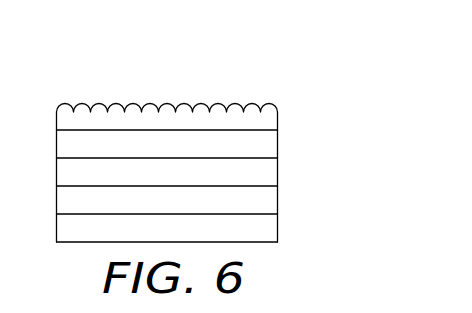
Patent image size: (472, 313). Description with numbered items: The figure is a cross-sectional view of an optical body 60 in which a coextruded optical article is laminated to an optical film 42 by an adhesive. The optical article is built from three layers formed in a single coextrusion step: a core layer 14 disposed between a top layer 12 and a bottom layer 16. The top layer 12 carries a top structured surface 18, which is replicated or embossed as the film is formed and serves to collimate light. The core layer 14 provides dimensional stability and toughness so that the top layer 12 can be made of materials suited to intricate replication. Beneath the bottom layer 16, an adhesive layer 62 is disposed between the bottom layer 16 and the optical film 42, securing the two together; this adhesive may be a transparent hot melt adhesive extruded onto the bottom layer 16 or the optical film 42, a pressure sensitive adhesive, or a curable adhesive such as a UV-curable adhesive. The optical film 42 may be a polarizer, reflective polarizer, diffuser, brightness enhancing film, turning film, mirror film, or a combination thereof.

The optical body 60 is at (243, 70).
The top structured surface 18 is at (256, 102).
The top layer 12 is at (267, 115).
The core layer 14 is at (267, 145).
The bottom layer 16 is at (267, 174).
The adhesive layer 62 is at (267, 203).
The optical film 42 is at (267, 233).